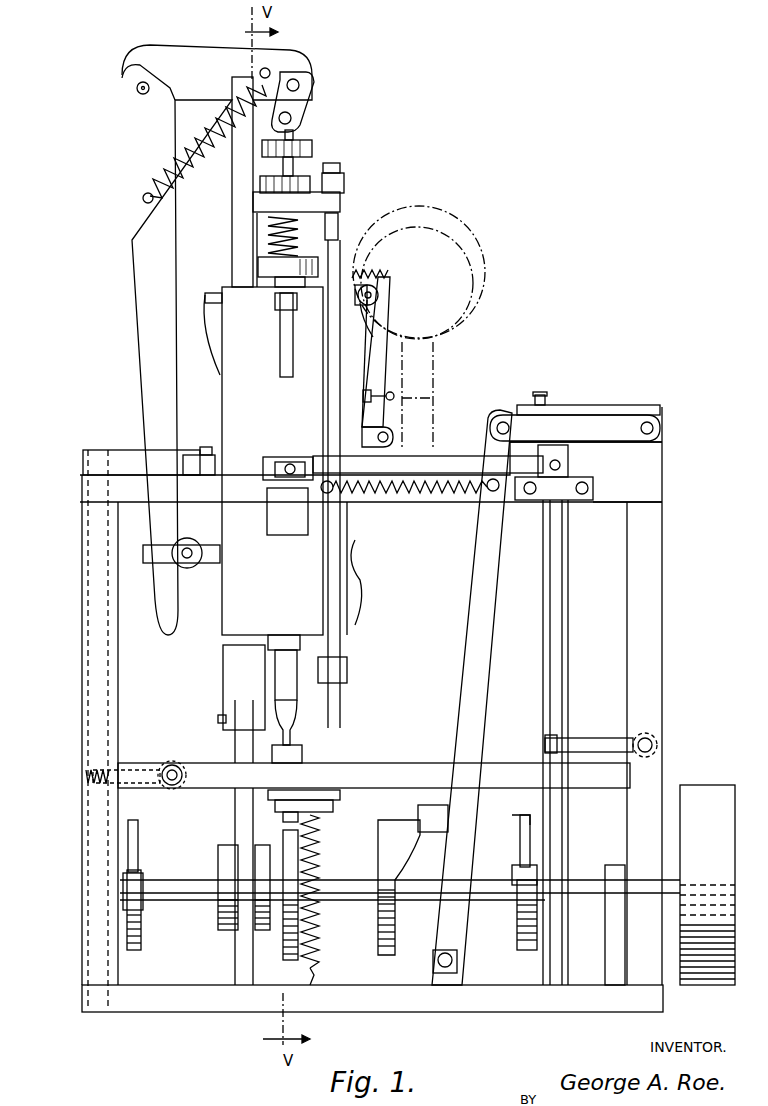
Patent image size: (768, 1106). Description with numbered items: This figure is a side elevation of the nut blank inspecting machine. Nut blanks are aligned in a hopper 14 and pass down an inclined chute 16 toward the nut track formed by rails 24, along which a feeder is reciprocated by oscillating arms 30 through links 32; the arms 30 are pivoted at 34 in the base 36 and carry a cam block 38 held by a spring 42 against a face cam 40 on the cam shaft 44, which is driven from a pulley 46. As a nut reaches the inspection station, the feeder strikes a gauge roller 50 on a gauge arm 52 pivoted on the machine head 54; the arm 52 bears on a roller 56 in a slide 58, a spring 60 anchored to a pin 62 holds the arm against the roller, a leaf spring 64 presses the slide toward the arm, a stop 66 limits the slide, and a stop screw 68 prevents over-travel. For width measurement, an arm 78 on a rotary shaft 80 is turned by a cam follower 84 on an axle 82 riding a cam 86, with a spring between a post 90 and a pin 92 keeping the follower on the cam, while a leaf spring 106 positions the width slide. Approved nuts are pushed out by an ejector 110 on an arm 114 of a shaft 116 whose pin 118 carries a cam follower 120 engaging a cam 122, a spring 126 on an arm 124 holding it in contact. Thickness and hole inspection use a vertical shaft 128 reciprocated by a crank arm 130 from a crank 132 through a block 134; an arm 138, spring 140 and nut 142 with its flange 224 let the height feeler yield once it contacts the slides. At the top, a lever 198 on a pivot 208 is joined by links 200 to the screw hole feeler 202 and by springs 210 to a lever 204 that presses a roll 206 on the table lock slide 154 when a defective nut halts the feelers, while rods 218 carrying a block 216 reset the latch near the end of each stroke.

The hopper 14 is at (462, 260).
The inclined chute 16 is at (436, 355).
The rails 24 is at (655, 462).
The oscillating arms 30 is at (480, 588).
The links 32 is at (580, 424).
The pivot 34 is at (458, 957).
The base 36 is at (500, 1012).
The cam block 38 is at (425, 812).
The face cam 40 is at (392, 834).
The spring 42 is at (448, 496).
The cam shaft 44 is at (325, 900).
The pulley 46 is at (720, 770).
The gauge roller 50 is at (395, 440).
The gauge arm 52 is at (390, 336).
The machine head 54 is at (272, 461).
The roller 56 is at (392, 297).
The slide 58 is at (367, 322).
The spring 60 is at (362, 276).
The pin 62 is at (330, 298).
The leaf spring 64 is at (212, 340).
The stop 66 is at (207, 303).
The stop screw 68 is at (398, 396).
The arm 78 is at (128, 462).
The rotary shaft 80 is at (118, 704).
The axle 82 is at (143, 900).
The cam follower 84 is at (148, 862).
The cam 86 is at (140, 824).
The post 90 is at (662, 530).
The pin 92 is at (128, 770).
The leaf spring 106 is at (285, 342).
The approved nut ejector 110 is at (291, 457).
The arm 114 is at (435, 462).
The shaft 116 is at (565, 522).
The pin 118 is at (515, 896).
The cam follower 120 is at (518, 878).
The cam 122 is at (522, 825).
The arm 124 is at (590, 740).
The spring 126 is at (658, 738).
The vertical shaft 128 is at (232, 195).
The crank arm 130 is at (236, 815).
The crank 132 is at (218, 925).
The block 134 is at (226, 688).
The arm 138 is at (341, 175).
The spring 140 is at (318, 222).
The nut 142 is at (262, 267).
The table lock slide 154 is at (215, 560).
The lever 198 is at (233, 58).
The links 200 is at (302, 112).
The nut screw hole feeler 202 is at (305, 130).
The lever 204 is at (130, 152).
The roll 206 is at (205, 527).
The pivot 208 is at (204, 144).
The springs 210 is at (211, 177).
The block 216 is at (347, 672).
The rods 218 is at (344, 205).
The flange 224 is at (262, 258).